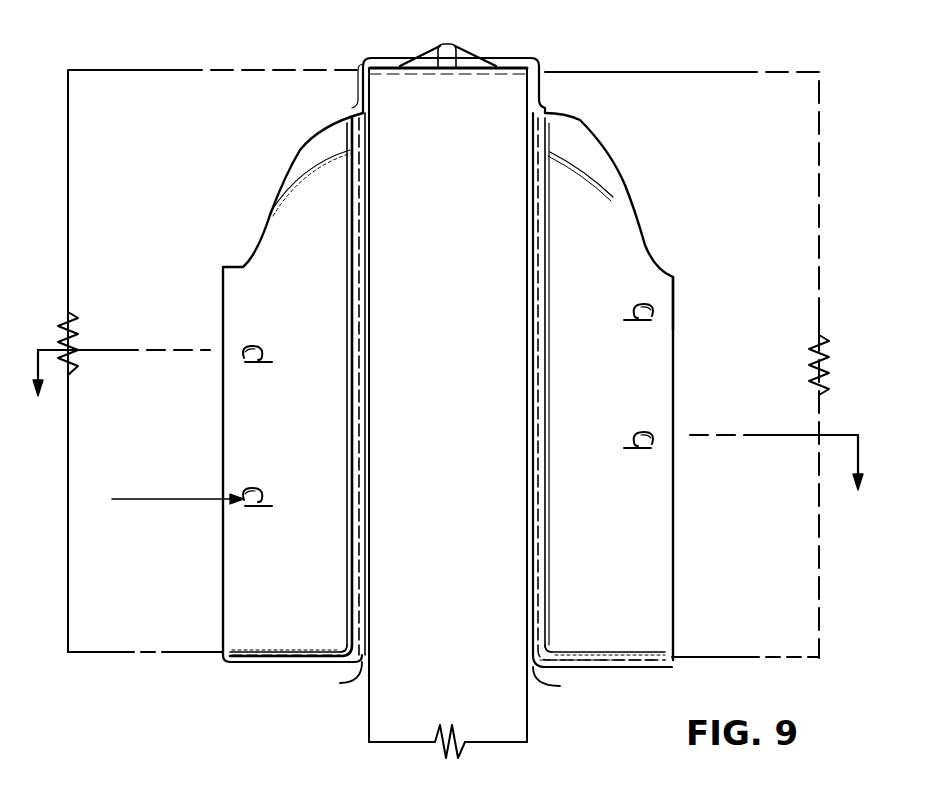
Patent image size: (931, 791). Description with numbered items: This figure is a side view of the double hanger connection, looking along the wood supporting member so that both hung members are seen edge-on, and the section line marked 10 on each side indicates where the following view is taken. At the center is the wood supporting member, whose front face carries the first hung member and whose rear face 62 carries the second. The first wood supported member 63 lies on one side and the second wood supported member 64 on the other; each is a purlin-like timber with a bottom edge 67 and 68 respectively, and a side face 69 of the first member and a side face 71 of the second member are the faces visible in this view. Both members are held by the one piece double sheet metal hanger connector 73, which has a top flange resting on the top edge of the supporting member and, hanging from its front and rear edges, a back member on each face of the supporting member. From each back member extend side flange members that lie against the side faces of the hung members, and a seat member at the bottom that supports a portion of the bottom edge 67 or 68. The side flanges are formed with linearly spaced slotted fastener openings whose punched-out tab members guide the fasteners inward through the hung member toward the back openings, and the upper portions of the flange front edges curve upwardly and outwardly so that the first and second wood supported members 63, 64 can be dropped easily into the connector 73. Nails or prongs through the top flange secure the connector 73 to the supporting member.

The section line (FIG. 10) 10 is at (447, 420).
The rear face 62 is at (527, 708).
The first wood supported member 63 is at (157, 70).
The second wood supported member 64 is at (738, 72).
The bottom edge 67 is at (172, 652).
The bottom edge 68 is at (790, 658).
The side face 69 is at (178, 138).
The side face 71 is at (769, 138).
The one piece double sheet metal hanger connector 73 is at (676, 276).